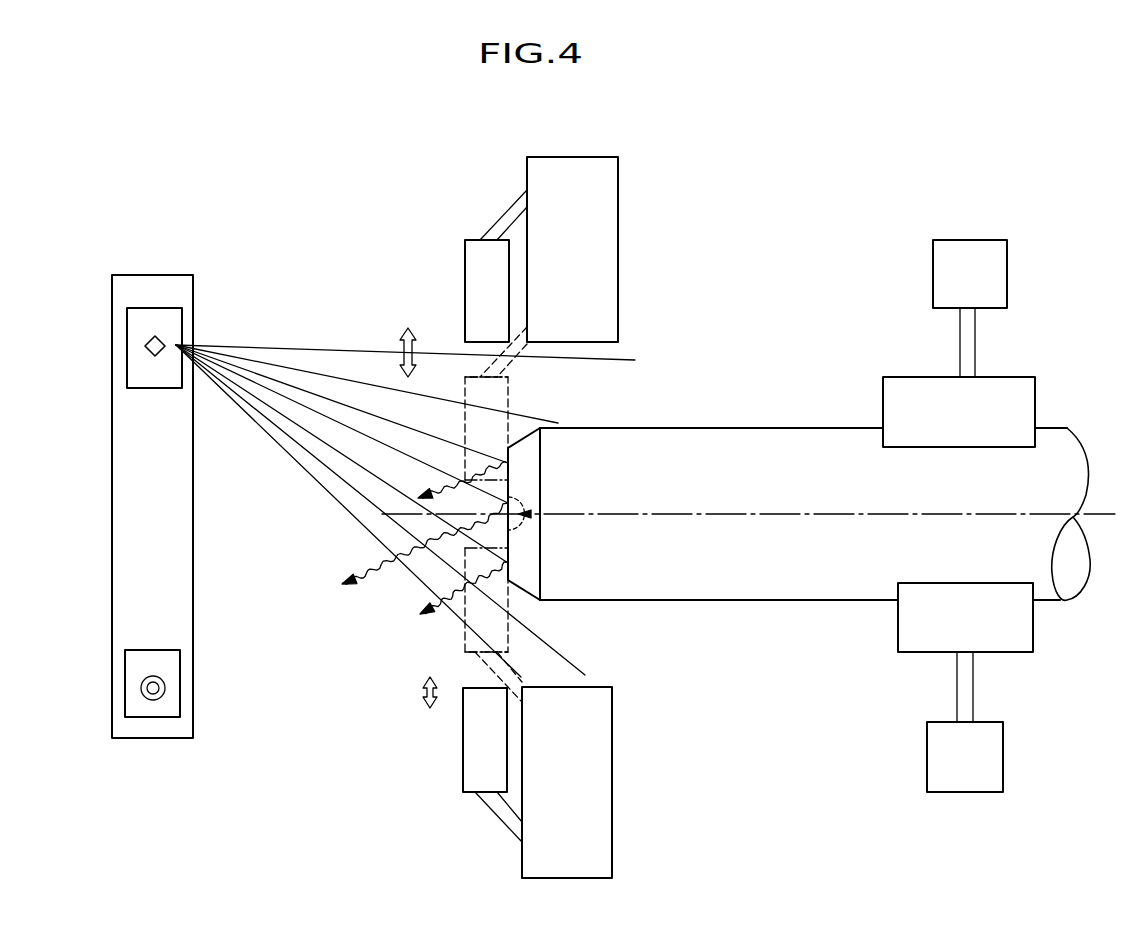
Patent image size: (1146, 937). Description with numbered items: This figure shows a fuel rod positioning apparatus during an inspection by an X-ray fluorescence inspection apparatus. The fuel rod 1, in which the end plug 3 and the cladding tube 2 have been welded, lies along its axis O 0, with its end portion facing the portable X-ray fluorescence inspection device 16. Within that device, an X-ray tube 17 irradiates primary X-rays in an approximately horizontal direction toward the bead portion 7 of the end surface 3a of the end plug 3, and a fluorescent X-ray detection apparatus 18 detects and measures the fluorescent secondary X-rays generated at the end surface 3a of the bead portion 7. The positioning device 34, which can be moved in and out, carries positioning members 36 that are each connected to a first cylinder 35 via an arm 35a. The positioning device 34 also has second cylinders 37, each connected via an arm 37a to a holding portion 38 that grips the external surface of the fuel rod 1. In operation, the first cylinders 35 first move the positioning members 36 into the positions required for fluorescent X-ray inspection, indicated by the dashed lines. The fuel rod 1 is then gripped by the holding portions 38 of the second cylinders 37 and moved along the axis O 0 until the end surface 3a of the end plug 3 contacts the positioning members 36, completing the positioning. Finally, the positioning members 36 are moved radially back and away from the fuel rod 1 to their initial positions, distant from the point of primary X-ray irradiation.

The axis 0 is at (1042, 513).
The fuel rod 1 is at (688, 422).
The cladding tube 2 is at (782, 600).
The end plug 3 is at (527, 587).
The end surface 3a is at (510, 580).
The bead portion 7 is at (508, 503).
The portable X-ray fluorescence inspection device 16 is at (112, 505).
The X-ray tube 17 is at (127, 347).
The fluorescent X-ray detection apparatus 18 is at (125, 682).
The positioning device 34 is at (777, 170).
The first cylinder 35 is at (565, 157).
The arm 35a is at (508, 207).
The positioning member 36 is at (480, 237).
The second cylinder 37 is at (982, 240).
The arm 37a is at (977, 347).
The holding portion 38 is at (1013, 377).